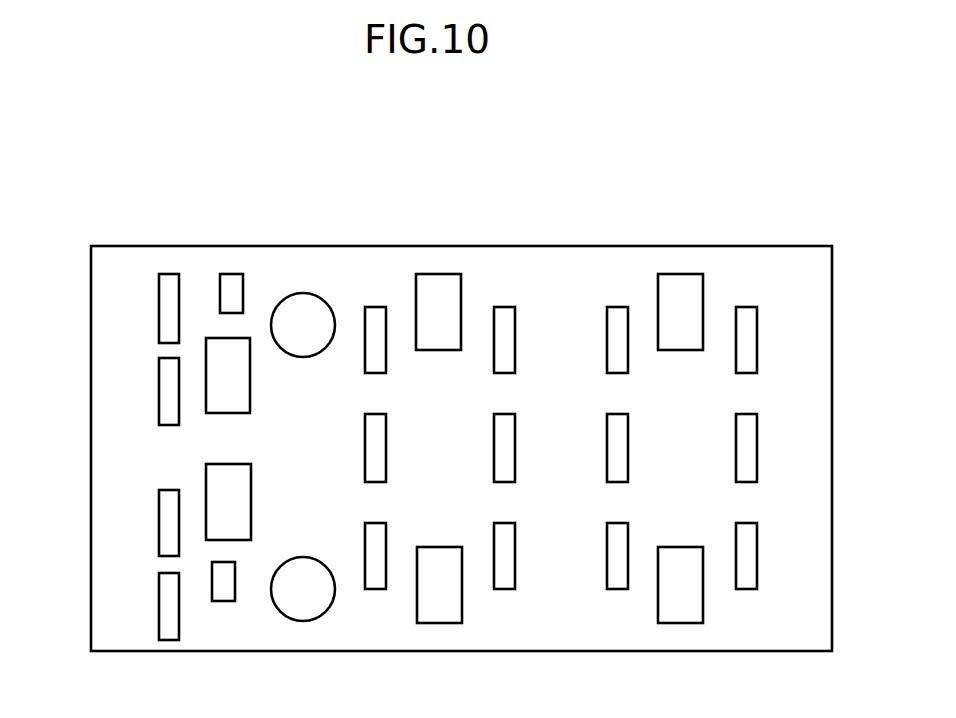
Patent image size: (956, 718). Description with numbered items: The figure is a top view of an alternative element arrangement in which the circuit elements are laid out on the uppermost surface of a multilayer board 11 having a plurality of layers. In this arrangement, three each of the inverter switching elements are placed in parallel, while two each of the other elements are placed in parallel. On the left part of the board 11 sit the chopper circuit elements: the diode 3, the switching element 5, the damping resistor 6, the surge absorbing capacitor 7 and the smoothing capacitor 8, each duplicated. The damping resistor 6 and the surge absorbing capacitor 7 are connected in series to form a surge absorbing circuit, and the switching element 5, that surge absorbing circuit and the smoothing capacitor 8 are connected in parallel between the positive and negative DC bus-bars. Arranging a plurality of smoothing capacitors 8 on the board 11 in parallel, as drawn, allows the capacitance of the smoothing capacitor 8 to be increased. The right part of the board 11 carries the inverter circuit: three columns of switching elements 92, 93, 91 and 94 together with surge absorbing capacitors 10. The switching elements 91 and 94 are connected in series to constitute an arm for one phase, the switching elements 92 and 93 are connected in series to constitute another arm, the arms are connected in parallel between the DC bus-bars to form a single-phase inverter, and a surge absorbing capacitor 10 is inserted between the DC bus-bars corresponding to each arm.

The diode 3 is at (170, 392).
The switching element 5 is at (170, 283).
The damping resistor 6 is at (232, 283).
The surge absorbing capacitor 7 is at (228, 373).
The smoothing capacitor 8 is at (312, 315).
The surge absorbing capacitor 10 is at (442, 310).
The multilayer board 11 is at (255, 633).
The switching element 91 is at (618, 318).
The switching element 92 is at (375, 318).
The switching element 93 is at (503, 318).
The switching element 94 is at (747, 318).